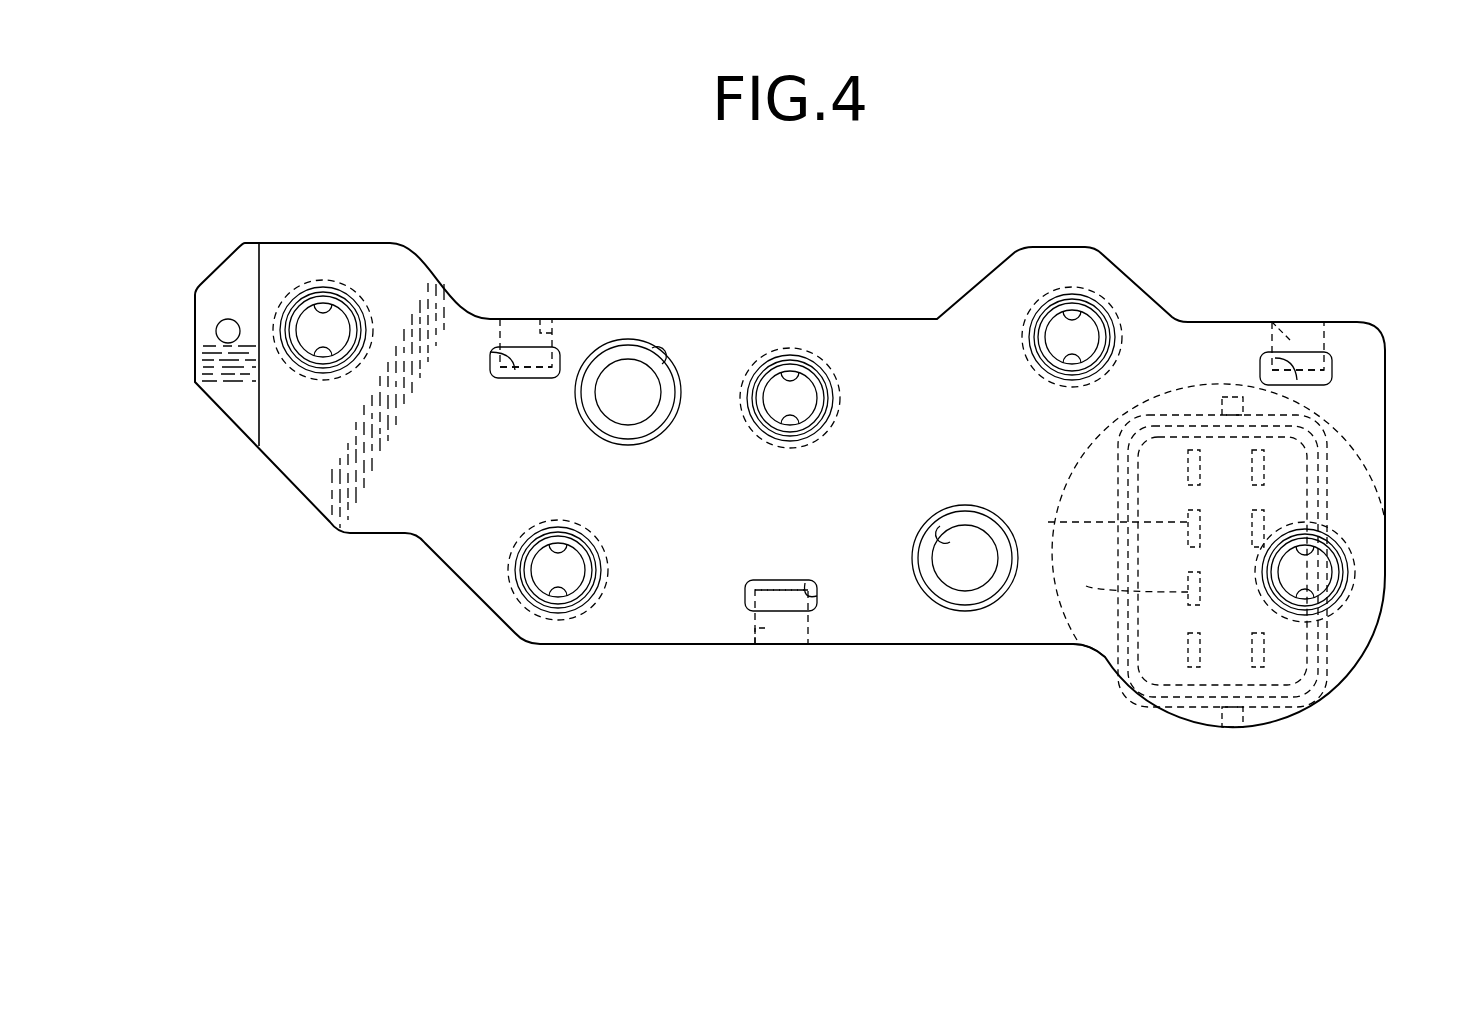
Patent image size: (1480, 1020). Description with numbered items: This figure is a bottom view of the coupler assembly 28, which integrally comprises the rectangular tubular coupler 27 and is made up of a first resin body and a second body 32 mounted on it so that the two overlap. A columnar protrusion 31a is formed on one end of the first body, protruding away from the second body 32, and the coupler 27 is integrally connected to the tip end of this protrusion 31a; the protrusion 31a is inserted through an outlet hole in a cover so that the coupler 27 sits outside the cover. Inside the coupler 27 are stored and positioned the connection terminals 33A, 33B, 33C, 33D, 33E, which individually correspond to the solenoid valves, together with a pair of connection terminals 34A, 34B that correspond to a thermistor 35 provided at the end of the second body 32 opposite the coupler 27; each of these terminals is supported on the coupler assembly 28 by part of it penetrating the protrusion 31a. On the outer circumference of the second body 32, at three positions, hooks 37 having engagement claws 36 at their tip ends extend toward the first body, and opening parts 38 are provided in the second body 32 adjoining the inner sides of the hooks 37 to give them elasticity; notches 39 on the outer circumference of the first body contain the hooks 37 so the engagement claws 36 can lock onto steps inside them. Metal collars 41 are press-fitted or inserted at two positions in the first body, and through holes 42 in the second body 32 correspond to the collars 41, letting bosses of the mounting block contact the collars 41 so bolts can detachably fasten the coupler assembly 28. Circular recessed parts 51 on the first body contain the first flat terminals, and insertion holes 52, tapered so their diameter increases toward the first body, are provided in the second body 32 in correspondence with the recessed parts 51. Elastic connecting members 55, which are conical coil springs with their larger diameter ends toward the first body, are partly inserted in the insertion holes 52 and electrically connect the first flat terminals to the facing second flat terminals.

The coupler 27 is at (1328, 476).
The coupler assembly 28 is at (806, 318).
The protrusion 31a is at (1066, 642).
The second body 32 is at (882, 347).
The connection terminal 33A is at (1385, 522).
The connection terminal 33B is at (1208, 650).
The connection terminal 33C is at (1188, 462).
The connection terminal 33D is at (1262, 462).
The connection terminal 33E is at (1262, 652).
The connection terminal 34A is at (1050, 520).
The connection terminal 34B is at (1128, 575).
The thermistor 35 is at (222, 334).
The engagement claw 36 is at (530, 372).
The hook 37 is at (512, 340).
The opening part 38 is at (500, 370).
The notch 39 is at (548, 318).
The collar 41 is at (632, 362).
The through hole 42 is at (665, 363).
The recessed part 51 is at (322, 296).
The insertion hole 52 is at (318, 358).
The elastic connecting member 55 is at (305, 302).